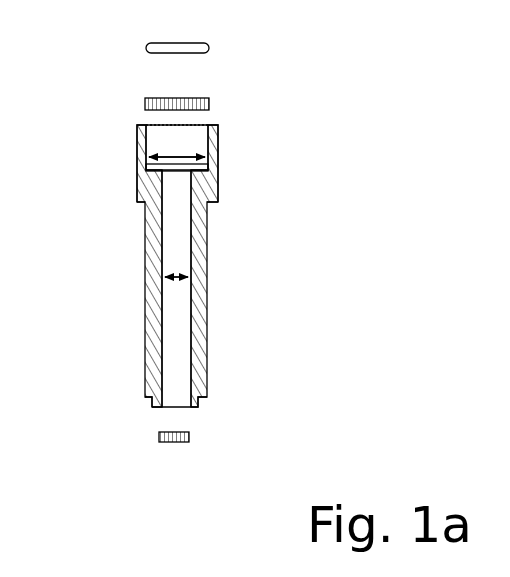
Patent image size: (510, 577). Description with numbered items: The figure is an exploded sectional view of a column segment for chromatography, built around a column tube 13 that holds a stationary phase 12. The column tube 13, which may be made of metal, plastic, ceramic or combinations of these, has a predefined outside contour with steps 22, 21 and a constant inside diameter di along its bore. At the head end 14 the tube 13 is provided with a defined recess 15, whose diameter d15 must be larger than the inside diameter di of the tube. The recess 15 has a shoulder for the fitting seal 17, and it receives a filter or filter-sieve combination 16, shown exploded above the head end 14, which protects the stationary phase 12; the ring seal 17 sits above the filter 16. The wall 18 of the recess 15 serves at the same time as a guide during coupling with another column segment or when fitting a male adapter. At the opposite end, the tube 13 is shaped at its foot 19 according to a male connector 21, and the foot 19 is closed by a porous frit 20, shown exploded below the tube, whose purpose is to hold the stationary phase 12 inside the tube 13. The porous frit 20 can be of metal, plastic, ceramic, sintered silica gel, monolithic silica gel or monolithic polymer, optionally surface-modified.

The stationary phase 12 is at (177, 333).
The column tube 13 is at (208, 238).
The head end 14 is at (222, 118).
The recess 15 is at (152, 130).
The filter or filter-sieve combination 16 is at (144, 100).
The ring seal 17 is at (144, 44).
The wall of the recess 18 is at (144, 154).
The foot 19 is at (204, 412).
The porous frit 20 is at (157, 437).
The step (male connector) 21 is at (152, 402).
The step 22 is at (140, 204).
The diameter of the recess d15 is at (214, 144).
The inside diameter di is at (191, 277).